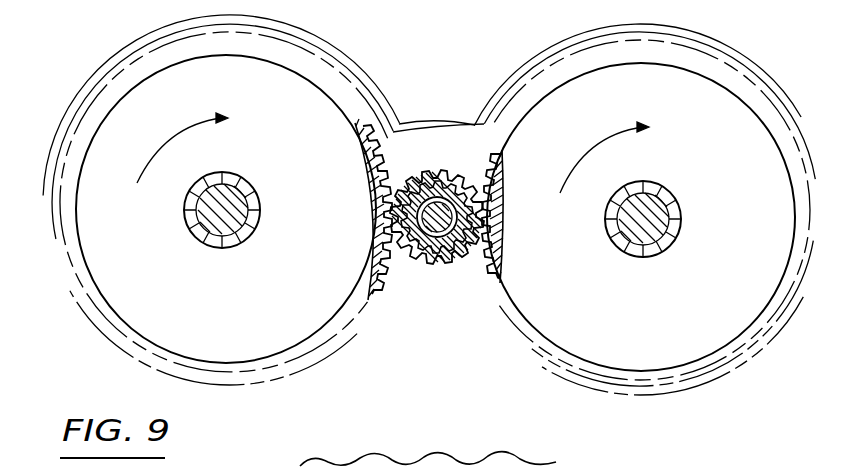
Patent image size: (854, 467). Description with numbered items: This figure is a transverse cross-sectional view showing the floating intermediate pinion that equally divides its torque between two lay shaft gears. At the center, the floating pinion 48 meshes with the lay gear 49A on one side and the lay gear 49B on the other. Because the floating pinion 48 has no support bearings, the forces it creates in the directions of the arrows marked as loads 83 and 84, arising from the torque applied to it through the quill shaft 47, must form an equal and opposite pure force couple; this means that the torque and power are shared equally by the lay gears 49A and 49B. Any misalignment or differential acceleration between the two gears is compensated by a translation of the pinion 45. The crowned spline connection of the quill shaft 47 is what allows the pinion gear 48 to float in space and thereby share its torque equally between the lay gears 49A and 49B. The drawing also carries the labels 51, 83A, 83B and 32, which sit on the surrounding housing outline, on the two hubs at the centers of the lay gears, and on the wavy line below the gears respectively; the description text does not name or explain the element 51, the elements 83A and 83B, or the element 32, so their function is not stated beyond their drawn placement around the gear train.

The housing 51 is at (290, 27).
The load arrow 83 is at (466, 187).
The roller shaft 83A is at (212, 246).
The roller shaft 83B is at (672, 196).
The lay gear 49A is at (372, 168).
The lay gear 49B is at (505, 158).
The pinion 45 is at (458, 220).
The quill shaft 47 is at (446, 265).
The floating pinion 48 is at (463, 150).
The load arrow 84 is at (465, 275).
The web (32 or 52) 32 is at (548, 461).